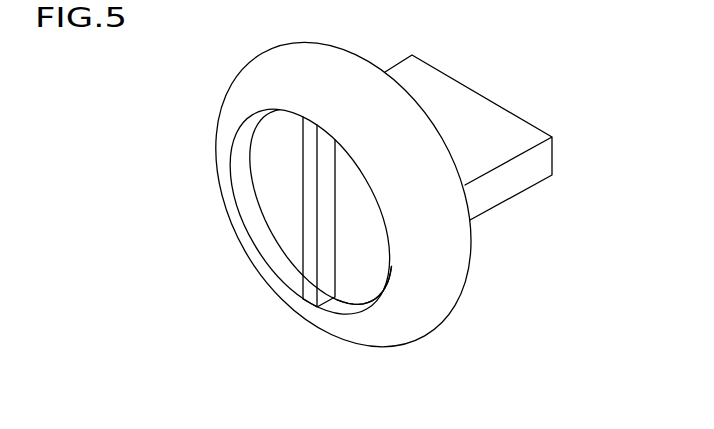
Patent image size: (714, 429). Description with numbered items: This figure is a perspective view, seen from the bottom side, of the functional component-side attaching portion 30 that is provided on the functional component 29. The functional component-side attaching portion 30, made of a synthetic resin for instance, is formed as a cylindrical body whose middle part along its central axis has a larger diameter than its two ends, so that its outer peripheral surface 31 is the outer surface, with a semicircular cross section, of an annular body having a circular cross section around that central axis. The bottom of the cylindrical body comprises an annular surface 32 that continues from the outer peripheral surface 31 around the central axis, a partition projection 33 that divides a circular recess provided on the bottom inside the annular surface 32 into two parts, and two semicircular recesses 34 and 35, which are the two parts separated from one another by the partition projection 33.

The functional component 29 is at (539, 198).
The functional component-side attaching portion 30 is at (372, 210).
The outer peripheral surface 31 is at (428, 300).
The annular surface 32 is at (287, 103).
The partition projection 33 is at (312, 228).
The semicircular recess 34 is at (283, 210).
The semicircular recess 35 is at (365, 258).